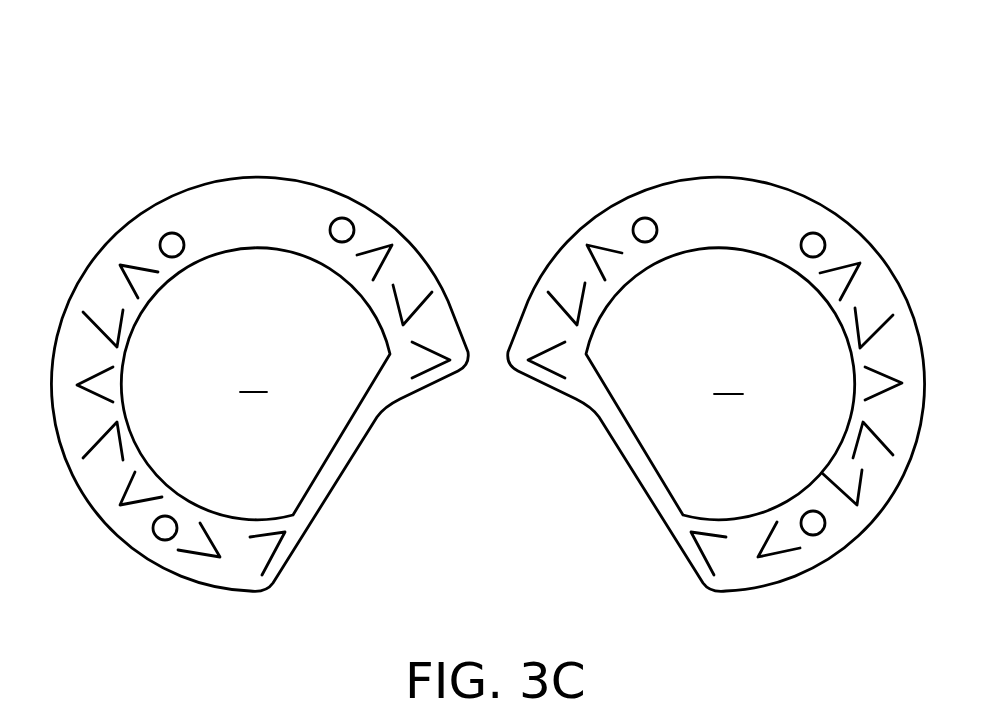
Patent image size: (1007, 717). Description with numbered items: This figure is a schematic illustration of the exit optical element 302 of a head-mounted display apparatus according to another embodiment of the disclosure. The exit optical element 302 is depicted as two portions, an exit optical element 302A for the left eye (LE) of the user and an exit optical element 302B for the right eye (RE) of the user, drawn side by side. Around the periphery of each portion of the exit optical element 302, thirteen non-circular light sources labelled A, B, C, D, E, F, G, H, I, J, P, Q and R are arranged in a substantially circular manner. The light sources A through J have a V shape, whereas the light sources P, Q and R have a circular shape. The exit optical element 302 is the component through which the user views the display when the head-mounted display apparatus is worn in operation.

The exit optical element 302 is at (484, 298).
The exit optical element for left eye 302A is at (237, 197).
The exit optical element for right eye 302B is at (747, 197).